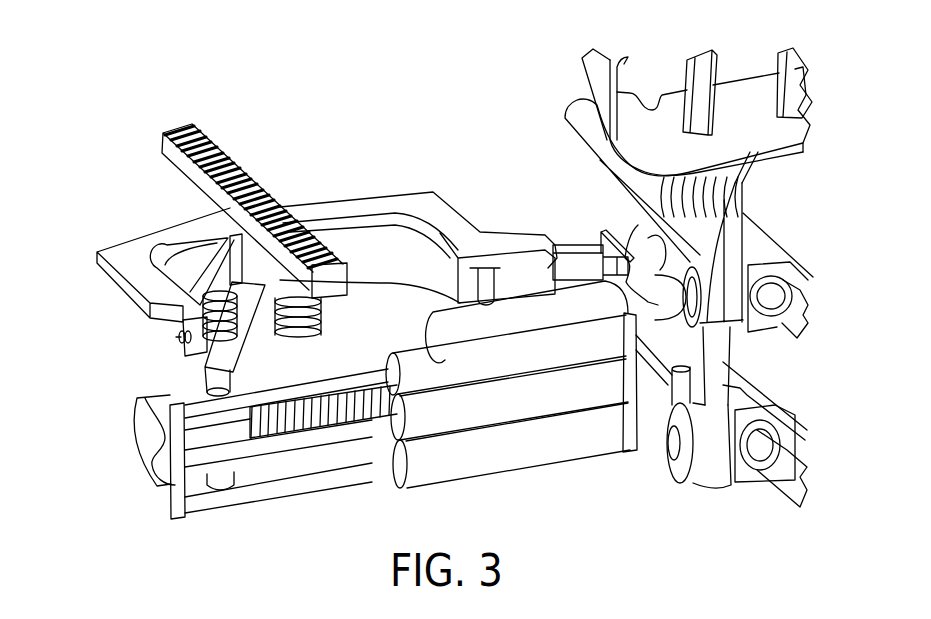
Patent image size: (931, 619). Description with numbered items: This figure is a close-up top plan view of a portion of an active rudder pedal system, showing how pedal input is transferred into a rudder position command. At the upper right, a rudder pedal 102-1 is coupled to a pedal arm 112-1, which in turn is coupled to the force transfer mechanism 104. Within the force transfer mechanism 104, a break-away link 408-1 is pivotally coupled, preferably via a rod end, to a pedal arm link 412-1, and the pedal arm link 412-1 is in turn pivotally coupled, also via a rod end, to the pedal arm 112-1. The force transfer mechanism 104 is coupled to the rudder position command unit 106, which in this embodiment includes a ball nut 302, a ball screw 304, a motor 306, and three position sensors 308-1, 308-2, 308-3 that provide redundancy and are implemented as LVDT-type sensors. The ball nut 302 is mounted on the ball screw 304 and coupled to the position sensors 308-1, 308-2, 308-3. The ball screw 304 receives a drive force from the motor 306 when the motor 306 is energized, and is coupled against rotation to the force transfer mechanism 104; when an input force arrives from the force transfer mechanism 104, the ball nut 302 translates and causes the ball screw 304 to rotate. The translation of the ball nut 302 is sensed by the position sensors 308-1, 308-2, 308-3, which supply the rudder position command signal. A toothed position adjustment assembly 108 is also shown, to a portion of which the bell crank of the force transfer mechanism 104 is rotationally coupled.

The rudder pedal 102-1 is at (613, 63).
The force transfer mechanism 104 is at (160, 341).
The rudder position command unit 106 is at (351, 462).
The position adjustment assembly 108 is at (342, 168).
The pedal arm 112-1 is at (752, 212).
The ball nut 302 is at (143, 452).
The ball screw 304 is at (372, 385).
The motor 306 is at (557, 300).
The position sensor 308-1 is at (552, 367).
The position sensor 308-2 is at (553, 413).
The position sensor 308-3 is at (553, 460).
The break-away link 408-1 is at (567, 253).
The pedal arm link 412-1 is at (626, 233).